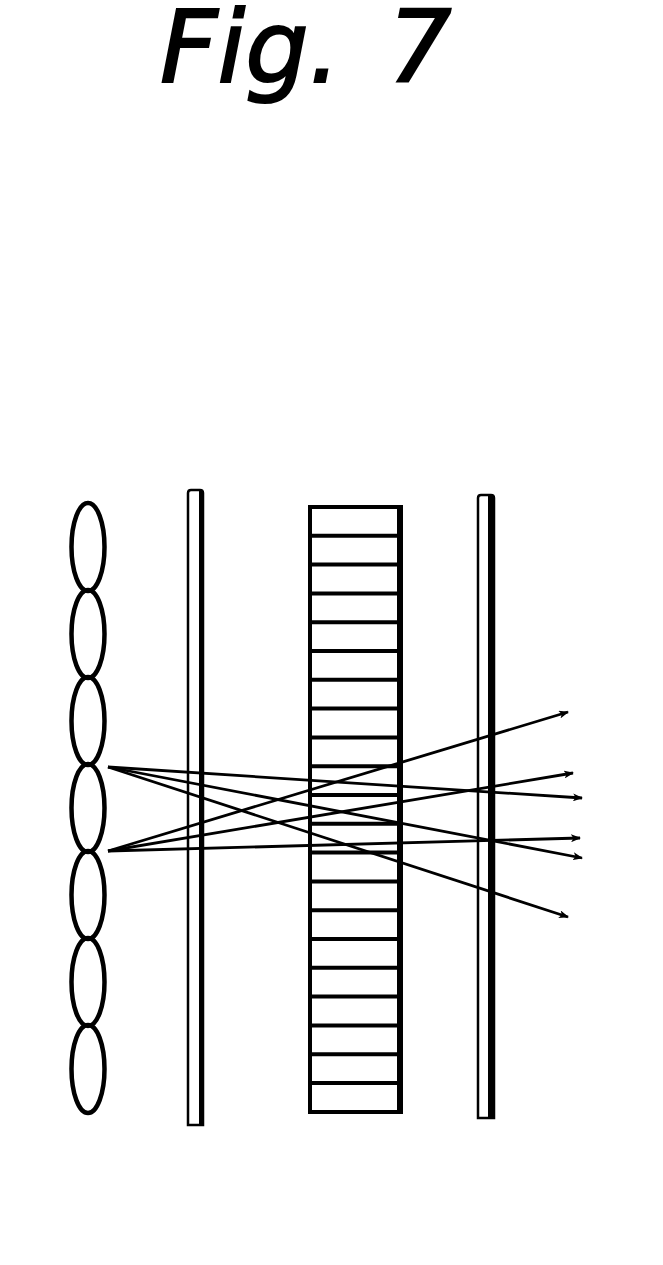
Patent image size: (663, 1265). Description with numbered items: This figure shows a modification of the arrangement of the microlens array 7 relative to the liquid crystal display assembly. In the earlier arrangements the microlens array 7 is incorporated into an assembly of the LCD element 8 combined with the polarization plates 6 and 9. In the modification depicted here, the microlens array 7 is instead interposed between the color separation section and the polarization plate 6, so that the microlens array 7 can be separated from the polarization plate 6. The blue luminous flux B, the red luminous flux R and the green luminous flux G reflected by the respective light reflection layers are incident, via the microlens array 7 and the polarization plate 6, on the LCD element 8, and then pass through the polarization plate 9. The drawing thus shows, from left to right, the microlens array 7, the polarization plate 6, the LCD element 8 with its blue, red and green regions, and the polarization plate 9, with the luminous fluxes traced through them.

The microlens array 7 is at (102, 1100).
The polarization plate 6 is at (197, 1125).
The LCD element 8 is at (368, 1112).
The polarization plate 9 is at (495, 1100).